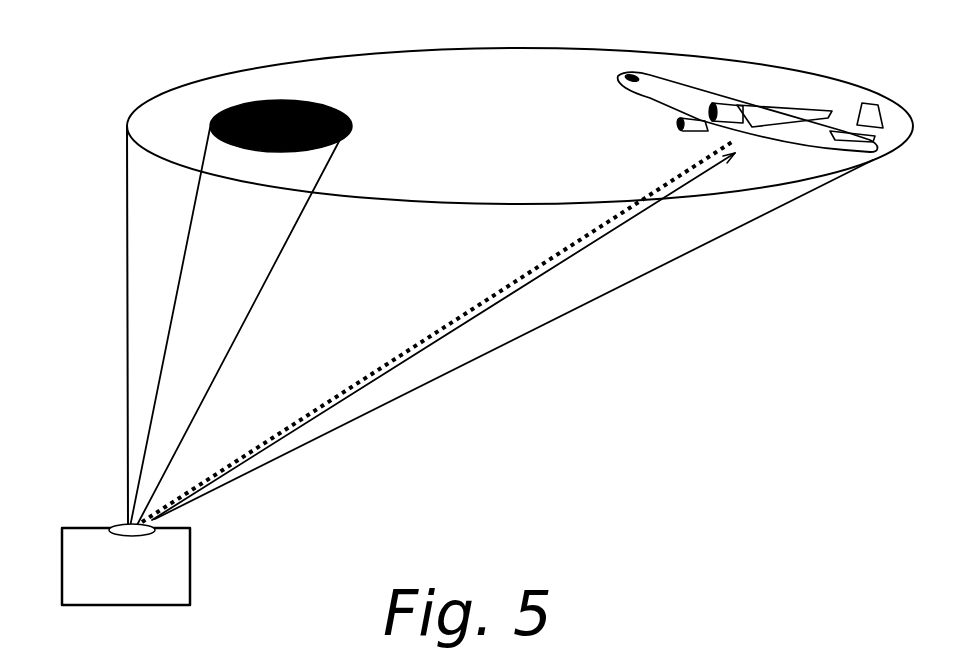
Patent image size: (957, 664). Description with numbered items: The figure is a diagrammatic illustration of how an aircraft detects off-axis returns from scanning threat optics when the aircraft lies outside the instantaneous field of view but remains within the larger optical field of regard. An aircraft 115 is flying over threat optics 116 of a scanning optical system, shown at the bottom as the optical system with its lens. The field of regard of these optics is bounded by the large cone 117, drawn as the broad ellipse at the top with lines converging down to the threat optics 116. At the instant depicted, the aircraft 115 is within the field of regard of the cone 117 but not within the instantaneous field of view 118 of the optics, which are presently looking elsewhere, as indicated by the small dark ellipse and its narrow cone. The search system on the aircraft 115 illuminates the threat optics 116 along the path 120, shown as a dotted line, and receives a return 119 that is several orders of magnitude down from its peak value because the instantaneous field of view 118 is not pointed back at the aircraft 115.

The aircraft 115 is at (750, 103).
The threat optics 116 is at (107, 528).
The cone 117 is at (330, 57).
The instantaneous field of view 118 is at (338, 110).
The return 119 is at (558, 267).
The path 120 is at (508, 283).